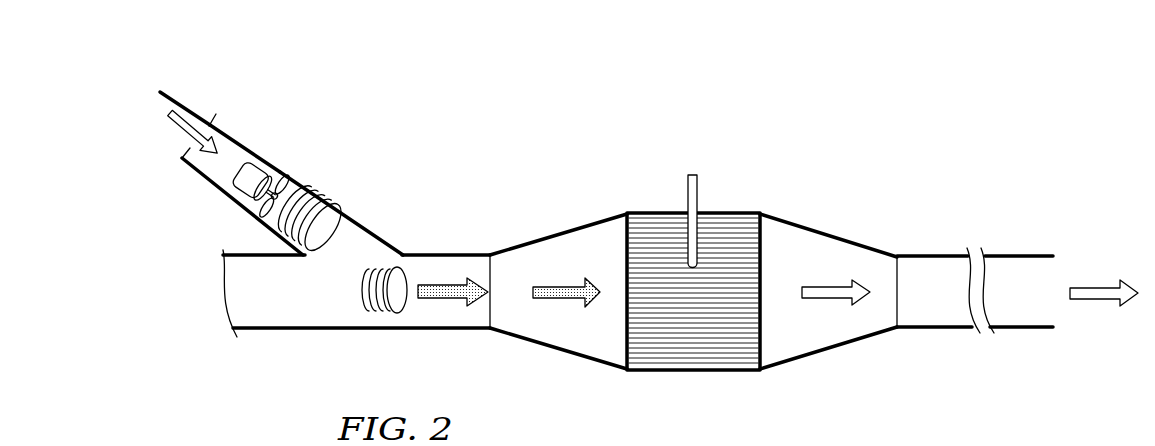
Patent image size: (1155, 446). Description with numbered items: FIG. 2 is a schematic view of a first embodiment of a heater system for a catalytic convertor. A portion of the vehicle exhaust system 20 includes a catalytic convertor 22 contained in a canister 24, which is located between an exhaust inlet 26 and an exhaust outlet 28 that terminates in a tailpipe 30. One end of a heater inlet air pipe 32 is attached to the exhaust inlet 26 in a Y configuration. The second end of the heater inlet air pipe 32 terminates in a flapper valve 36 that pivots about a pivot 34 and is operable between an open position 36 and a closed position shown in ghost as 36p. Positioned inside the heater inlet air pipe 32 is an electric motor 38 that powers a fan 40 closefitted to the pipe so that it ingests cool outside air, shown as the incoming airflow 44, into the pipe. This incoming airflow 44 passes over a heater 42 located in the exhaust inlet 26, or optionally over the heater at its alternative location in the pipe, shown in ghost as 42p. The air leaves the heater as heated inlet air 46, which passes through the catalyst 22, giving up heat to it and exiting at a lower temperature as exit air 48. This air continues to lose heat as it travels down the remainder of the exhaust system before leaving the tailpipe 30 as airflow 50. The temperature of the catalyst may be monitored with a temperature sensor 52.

The vehicle exhaust system 20 is at (690, 378).
The catalytic convertor 22 is at (717, 238).
The canister 24 is at (835, 235).
The exhaust inlet 26 is at (293, 330).
The exhaust outlet 28 is at (952, 330).
The tailpipe 30 is at (1017, 252).
The heater inlet air pipe 32 is at (335, 204).
The pivot 34 is at (216, 114).
The flapper valve 36 is at (186, 108).
The closed position of flapper valve 36p is at (188, 145).
The electric motor 38 is at (264, 165).
The fan 40 is at (300, 190).
The heater 42 is at (388, 314).
The optional heater location 42p is at (333, 244).
The incoming airflow 44 is at (178, 128).
The heated inlet air 46 is at (447, 299).
The exit air 48 is at (822, 300).
The airflow 50 is at (1097, 300).
The temperature sensor 52 is at (688, 197).